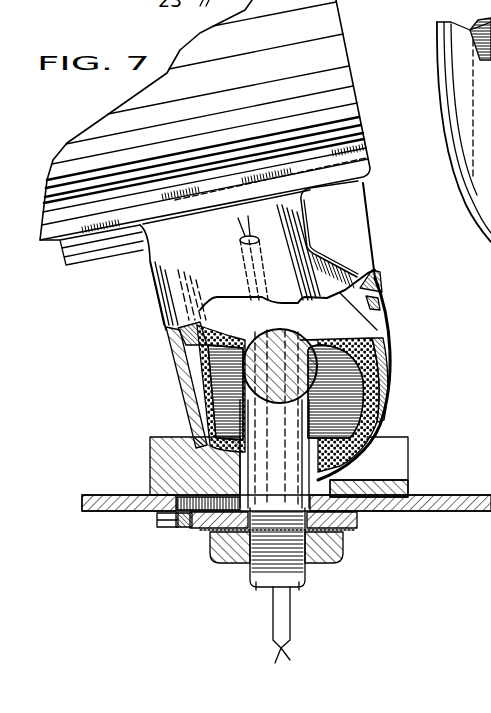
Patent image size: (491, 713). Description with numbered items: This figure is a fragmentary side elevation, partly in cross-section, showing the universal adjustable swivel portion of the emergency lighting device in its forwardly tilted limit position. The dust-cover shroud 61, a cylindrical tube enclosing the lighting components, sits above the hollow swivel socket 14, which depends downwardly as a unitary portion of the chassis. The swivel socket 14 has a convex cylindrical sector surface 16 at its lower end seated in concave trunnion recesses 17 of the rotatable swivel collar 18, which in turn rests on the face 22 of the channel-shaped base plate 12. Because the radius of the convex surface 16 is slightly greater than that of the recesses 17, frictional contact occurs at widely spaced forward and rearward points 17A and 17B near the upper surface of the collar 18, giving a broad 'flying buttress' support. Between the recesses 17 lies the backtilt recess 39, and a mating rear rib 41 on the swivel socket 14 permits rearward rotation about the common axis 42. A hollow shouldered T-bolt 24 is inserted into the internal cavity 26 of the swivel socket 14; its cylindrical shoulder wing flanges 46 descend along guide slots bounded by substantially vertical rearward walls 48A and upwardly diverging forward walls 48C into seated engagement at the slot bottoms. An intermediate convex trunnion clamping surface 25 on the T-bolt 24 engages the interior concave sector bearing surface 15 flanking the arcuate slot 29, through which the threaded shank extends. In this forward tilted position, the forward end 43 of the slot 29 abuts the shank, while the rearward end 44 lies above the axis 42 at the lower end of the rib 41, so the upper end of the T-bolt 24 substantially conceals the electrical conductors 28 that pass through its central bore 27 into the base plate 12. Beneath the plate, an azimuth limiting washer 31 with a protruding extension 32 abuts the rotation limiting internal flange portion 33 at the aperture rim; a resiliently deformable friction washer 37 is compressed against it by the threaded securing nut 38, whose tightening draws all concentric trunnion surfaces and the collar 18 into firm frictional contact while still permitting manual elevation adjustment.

The channel-shaped base plate 12 is at (102, 488).
The hollow swivel socket 14 is at (168, 338).
The interior concave sector bearing surface 15 is at (277, 386).
The convex cylindrical sector surface 16 is at (385, 415).
The concave trunnion recesses 17 is at (340, 453).
The forward frictional engagement point 17A is at (194, 437).
The rearward frictional engagement point 17B is at (340, 445).
The rotatable swivel collar 18 is at (150, 437).
The face of base plate 22 is at (484, 485).
The hollow shouldered T-bolt 24 is at (315, 582).
The intermediate trunnion clamping surface 25 is at (384, 367).
The hollow internal cavity 26 is at (218, 299).
The central bore 27 is at (260, 592).
The electrical conductors 28 is at (283, 628).
The arcuate slot 29 is at (387, 338).
The azimuth limiting washer 31 is at (360, 514).
The protruding extension 32 is at (160, 521).
The rotation limiting internal flange portion 33 is at (178, 528).
The resiliently deformable friction washer 37 is at (363, 528).
The threaded securing nut 38 is at (334, 562).
The backtilt recess 39 is at (388, 477).
The rear rib 41 is at (347, 228).
The common axis 42 is at (270, 347).
The forward end of arcuate slot 43 is at (251, 469).
The rearward end of arcuate slot 44 is at (381, 300).
The cylindrical shoulder wing flanges 46 is at (286, 336).
The rearward walls of guide slots 48A is at (376, 286).
The forward walls of guide slots 48C is at (197, 316).
The dust-cover shroud 61 is at (336, 27).